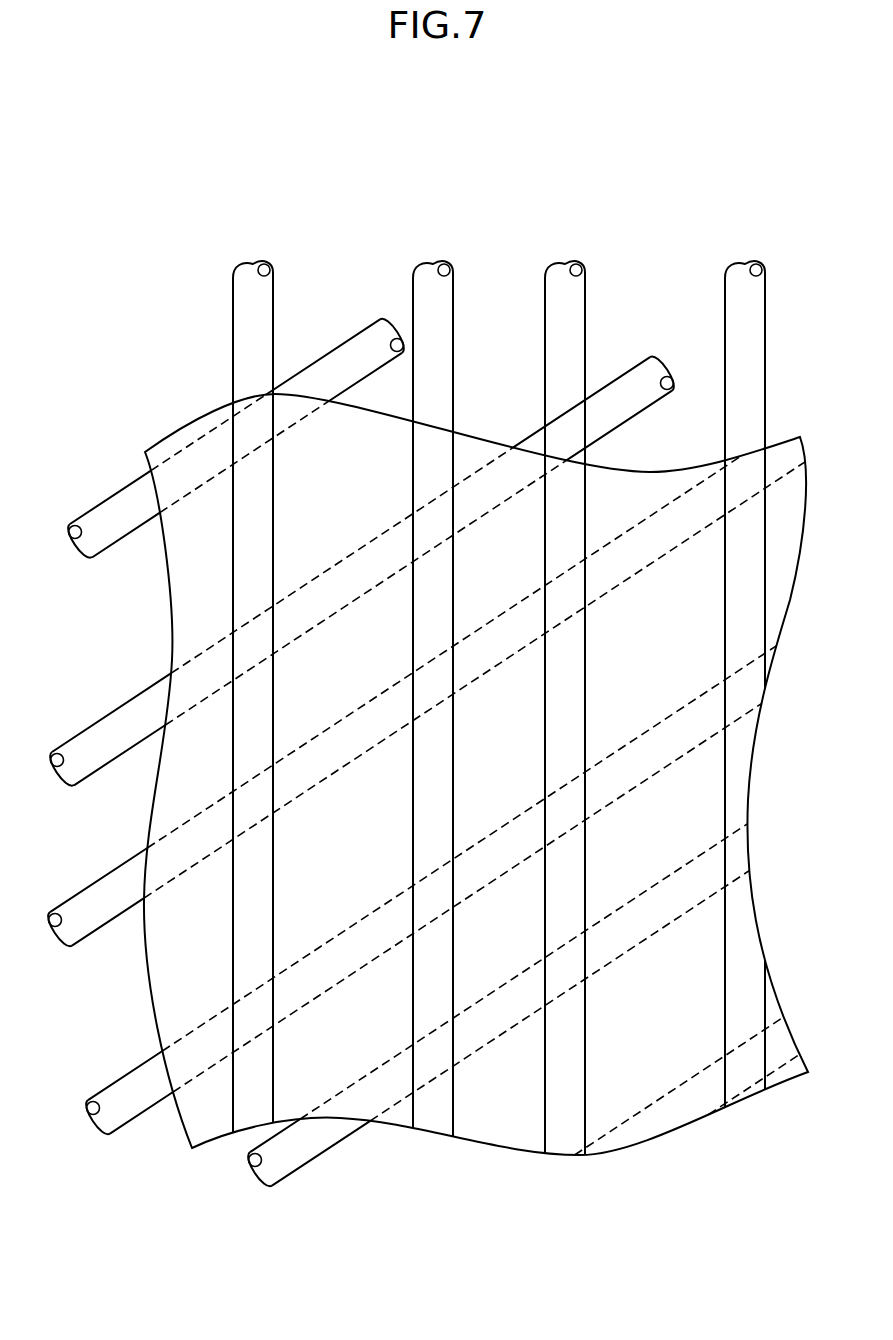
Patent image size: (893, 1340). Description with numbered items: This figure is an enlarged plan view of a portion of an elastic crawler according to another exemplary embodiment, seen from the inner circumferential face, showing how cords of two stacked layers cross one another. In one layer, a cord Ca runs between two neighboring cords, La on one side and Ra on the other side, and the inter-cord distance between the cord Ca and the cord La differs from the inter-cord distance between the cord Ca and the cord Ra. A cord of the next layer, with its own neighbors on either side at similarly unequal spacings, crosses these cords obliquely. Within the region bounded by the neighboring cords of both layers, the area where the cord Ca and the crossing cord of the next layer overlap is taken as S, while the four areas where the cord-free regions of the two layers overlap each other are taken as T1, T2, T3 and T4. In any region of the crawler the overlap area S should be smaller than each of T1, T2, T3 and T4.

The cord adjacent to cord Ca on one side La is at (267, 288).
The cord included in layer a Ca is at (445, 295).
The cord adjacent to cord Ca on the other side Ra is at (577, 295).
The area of portions where Ca and Ca+1 overlap S is at (432, 692).
The area where regions without Ca or Ca+1 overlap T1 is at (500, 745).
The area where regions without Ca or Ca+1 overlap T2 is at (493, 567).
The area where regions without Ca or Ca+1 overlap T3 is at (345, 668).
The area where regions without Ca or Ca+1 overlap T4 is at (350, 833).